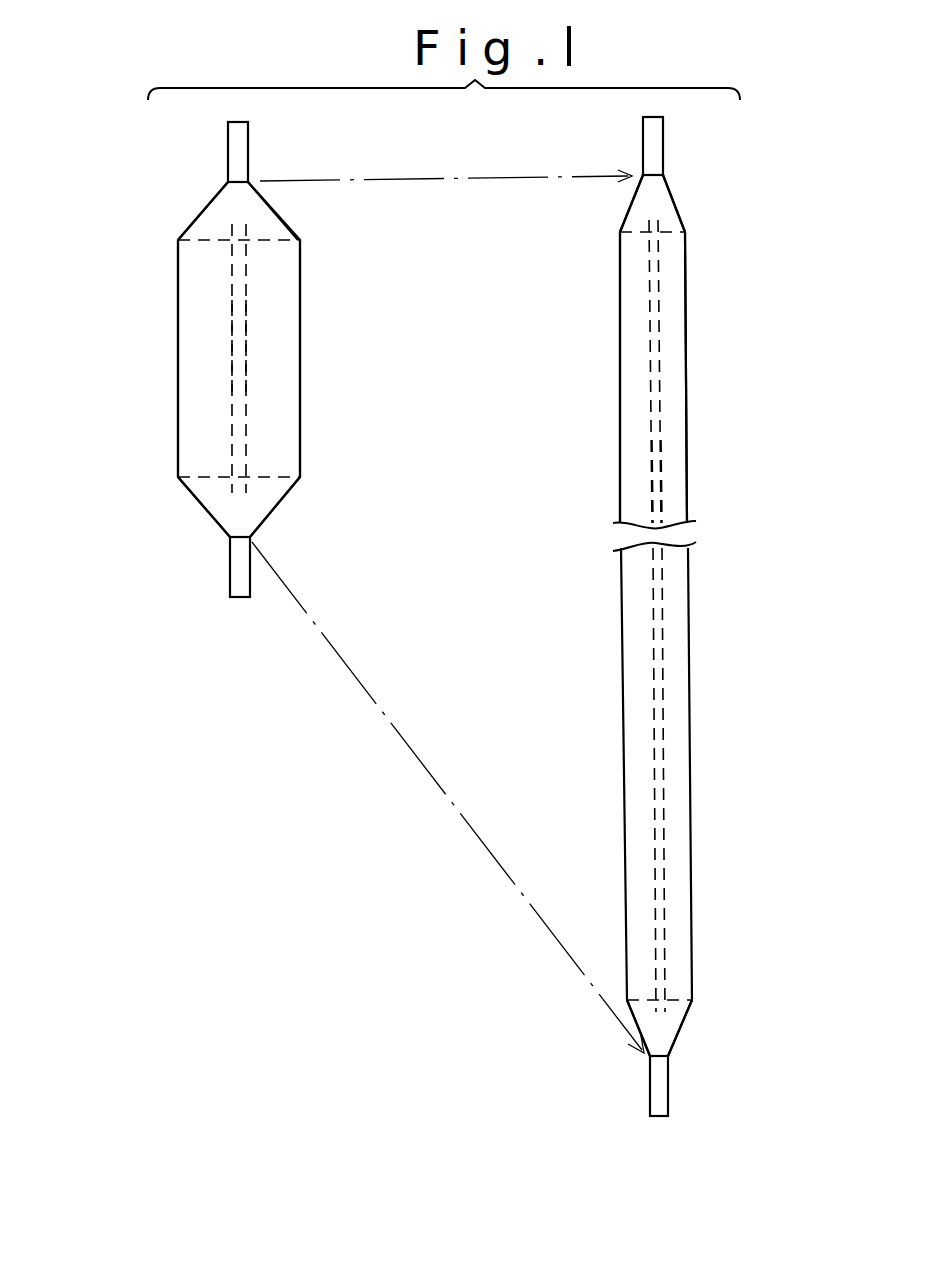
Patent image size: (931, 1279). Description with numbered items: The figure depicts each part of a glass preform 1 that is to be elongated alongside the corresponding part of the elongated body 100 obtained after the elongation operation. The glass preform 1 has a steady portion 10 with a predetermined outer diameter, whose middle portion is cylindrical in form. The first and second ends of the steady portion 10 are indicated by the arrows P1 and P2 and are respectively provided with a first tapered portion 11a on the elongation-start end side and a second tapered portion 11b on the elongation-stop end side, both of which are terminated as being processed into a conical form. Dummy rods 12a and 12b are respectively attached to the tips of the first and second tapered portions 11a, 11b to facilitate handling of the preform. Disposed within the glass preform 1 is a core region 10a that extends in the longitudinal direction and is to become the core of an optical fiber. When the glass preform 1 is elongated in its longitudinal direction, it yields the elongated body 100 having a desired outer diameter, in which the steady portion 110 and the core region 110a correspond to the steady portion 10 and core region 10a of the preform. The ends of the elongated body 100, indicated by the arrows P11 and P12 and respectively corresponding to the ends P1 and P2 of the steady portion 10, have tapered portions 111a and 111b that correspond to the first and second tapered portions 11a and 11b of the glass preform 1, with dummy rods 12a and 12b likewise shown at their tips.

The glass preform 1 is at (168, 316).
The steady portion 10 is at (278, 333).
The core region 10a is at (248, 378).
The first tapered portion 11a is at (268, 494).
The second tapered portion 11b is at (268, 224).
The dummy rod 12a is at (240, 572).
The dummy rod 12b is at (240, 150).
The first end P1 is at (176, 477).
The second end P2 is at (176, 240).
The elongated body 100 is at (700, 366).
The steady portion of elongated body 110 is at (675, 462).
The core region of elongated body 110a is at (660, 487).
The tapered portion 111a is at (672, 1022).
The tapered portion 111b is at (668, 210).
The end of elongated body P11 is at (697, 1000).
The end of elongated body P12 is at (690, 232).